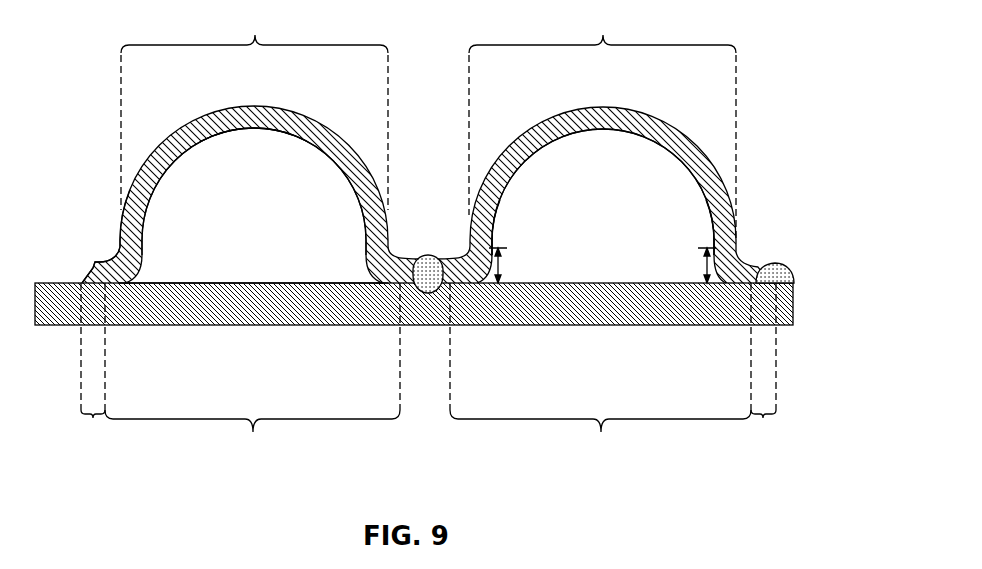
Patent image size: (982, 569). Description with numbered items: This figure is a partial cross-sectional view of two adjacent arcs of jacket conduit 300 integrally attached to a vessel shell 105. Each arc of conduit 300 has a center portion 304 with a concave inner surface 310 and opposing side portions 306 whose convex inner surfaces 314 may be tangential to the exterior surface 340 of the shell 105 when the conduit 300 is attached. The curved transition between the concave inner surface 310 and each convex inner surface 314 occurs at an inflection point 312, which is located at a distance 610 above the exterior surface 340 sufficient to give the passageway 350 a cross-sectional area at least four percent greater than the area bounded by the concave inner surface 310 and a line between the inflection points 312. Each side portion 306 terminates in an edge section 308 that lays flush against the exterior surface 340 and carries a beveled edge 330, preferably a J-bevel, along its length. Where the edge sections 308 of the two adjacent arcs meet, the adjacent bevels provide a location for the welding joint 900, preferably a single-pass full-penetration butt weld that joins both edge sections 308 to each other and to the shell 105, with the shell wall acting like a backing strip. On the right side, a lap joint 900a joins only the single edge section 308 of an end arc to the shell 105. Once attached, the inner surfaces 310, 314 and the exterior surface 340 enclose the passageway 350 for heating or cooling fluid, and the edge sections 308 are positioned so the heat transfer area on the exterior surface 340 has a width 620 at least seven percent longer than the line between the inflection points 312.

The vessel shell 105 is at (234, 326).
The conduit 300 is at (233, 113).
The center portion 304 is at (428, 120).
The side portion 306 is at (118, 248).
The edge section 308 is at (93, 419).
The concave inner surface 310 is at (252, 129).
The inflection point 312 is at (492, 233).
The convex inner surface 314 is at (123, 283).
The beveled edge 330 is at (97, 273).
The exterior surface 340 is at (174, 282).
The passageway 350 is at (243, 256).
The distance 610 is at (501, 262).
The width 620 is at (253, 433).
The welding joint 900 is at (421, 256).
The lap joint 900a is at (781, 265).